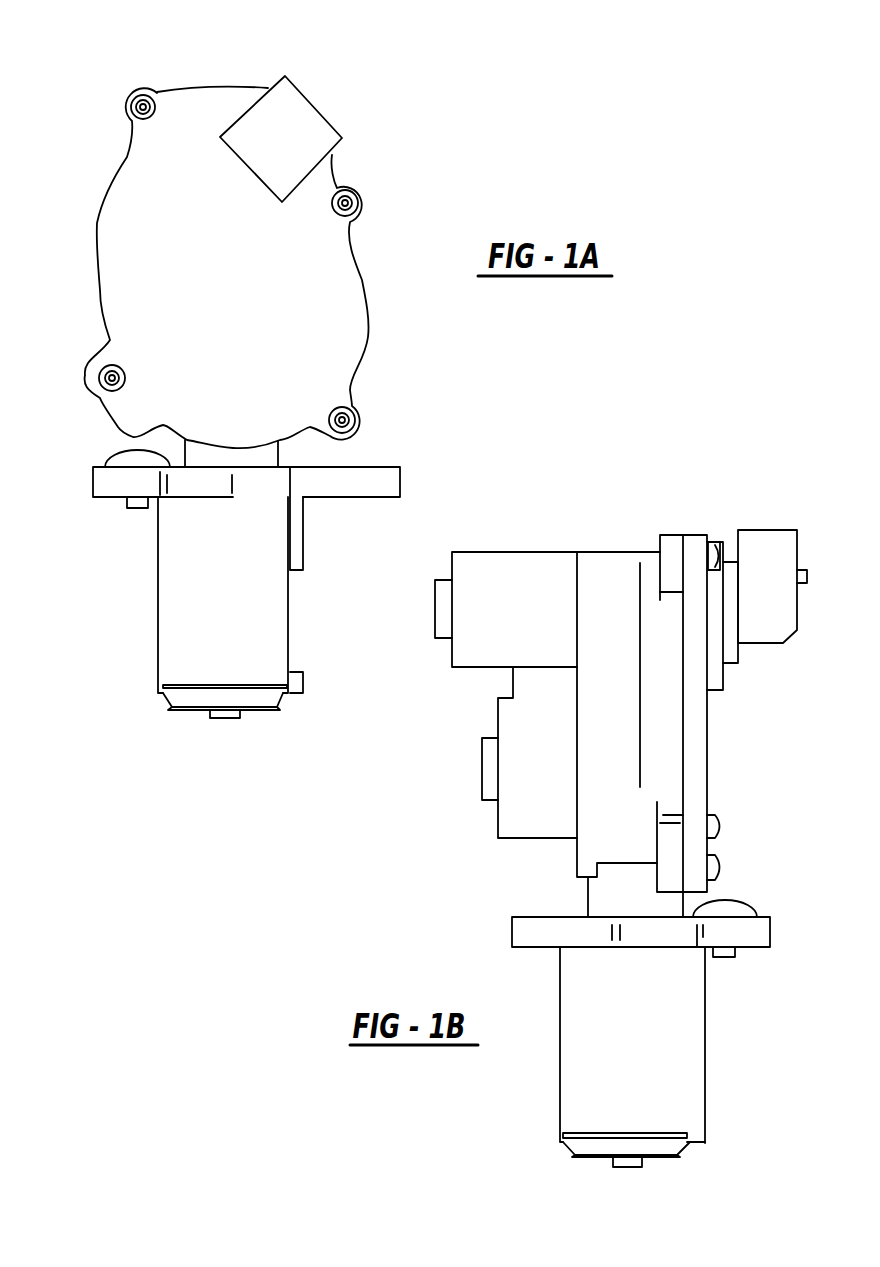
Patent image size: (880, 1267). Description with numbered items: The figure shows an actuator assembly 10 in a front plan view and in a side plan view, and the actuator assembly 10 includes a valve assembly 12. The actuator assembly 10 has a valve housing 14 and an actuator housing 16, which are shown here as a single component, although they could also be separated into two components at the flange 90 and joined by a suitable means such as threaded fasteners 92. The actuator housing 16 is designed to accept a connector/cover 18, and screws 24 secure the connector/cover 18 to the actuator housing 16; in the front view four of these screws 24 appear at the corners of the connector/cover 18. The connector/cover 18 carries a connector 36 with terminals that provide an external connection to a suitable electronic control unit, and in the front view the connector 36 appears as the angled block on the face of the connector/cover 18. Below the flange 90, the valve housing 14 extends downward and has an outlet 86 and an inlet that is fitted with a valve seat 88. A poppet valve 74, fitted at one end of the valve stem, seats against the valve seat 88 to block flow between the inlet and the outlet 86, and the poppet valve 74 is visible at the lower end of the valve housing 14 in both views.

In FIG. 1A, the actuator assembly 10 is at (227, 62).
In FIG. 1B, the actuator assembly 10 is at (650, 474).
In FIG. 1B, the valve assembly 12 is at (757, 1047).
In FIG. 1A, the valve housing 14 is at (158, 572).
In FIG. 1B, the valve housing 14 is at (560, 1112).
In FIG. 1B, the actuator housing 16 is at (545, 550).
In FIG. 1A, the connector/cover 18 is at (180, 287).
In FIG. 1B, the connector/cover 18 is at (707, 765).
In FIG. 1A, the screws 24 is at (142, 107).
In FIG. 1B, the screws 24 is at (717, 537).
In FIG. 1A, the connector 36 is at (293, 110).
In FIG. 1B, the connector 36 is at (777, 555).
In FIG. 1A, the poppet valve 74 is at (177, 710).
In FIG. 1B, the poppet valve 74 is at (577, 1157).
In FIG. 1A, the outlet 86 is at (290, 602).
In FIG. 1A, the valve seat 88 is at (293, 693).
In FIG. 1B, the valve seat 88 is at (705, 1143).
In FIG. 1A, the flange 90 is at (93, 480).
In FIG. 1B, the flange 90 is at (512, 922).
In FIG. 1A, the threaded fasteners 92 is at (118, 453).
In FIG. 1B, the threaded fasteners 92 is at (737, 957).